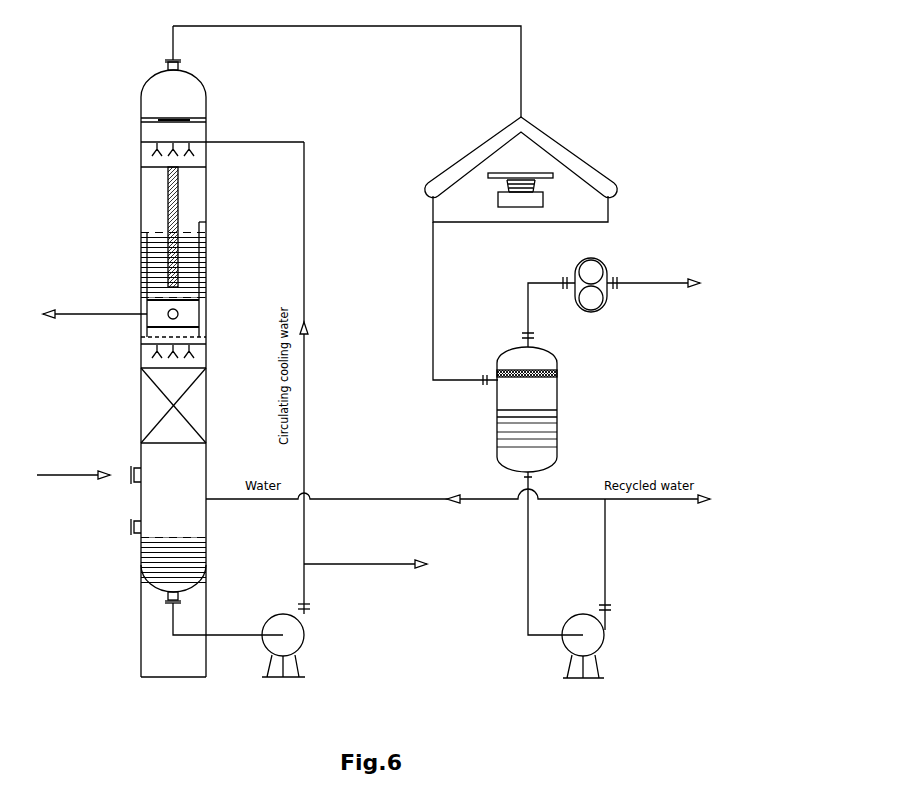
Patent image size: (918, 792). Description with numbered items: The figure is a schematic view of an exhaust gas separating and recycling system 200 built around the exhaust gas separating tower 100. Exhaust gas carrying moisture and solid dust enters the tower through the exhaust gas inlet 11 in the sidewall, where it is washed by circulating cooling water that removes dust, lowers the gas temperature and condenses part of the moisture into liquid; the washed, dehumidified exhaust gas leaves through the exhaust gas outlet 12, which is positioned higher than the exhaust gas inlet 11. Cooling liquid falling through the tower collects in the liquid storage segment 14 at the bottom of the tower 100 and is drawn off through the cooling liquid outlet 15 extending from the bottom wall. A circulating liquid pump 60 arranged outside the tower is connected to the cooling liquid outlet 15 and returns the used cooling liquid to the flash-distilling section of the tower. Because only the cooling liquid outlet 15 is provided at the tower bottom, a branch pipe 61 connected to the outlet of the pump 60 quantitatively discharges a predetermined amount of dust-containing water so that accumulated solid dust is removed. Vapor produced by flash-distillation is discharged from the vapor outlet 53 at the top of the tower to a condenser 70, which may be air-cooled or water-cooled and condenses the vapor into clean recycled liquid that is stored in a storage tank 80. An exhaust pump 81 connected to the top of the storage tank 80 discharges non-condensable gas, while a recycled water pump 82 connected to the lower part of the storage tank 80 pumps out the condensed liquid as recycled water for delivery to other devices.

The exhaust gas separating and recycling system 200 is at (592, 26).
The exhaust gas separating tower 100 is at (141, 193).
The vapor outlet 53 is at (165, 61).
The exhaust gas outlet 12 is at (178, 313).
The exhaust gas inlet 11 is at (138, 480).
The liquid storage segment 14 is at (150, 562).
The cooling liquid outlet 15 is at (165, 602).
The circulating liquid pump 60 is at (300, 650).
The branch pipe 61 is at (330, 567).
The condenser 70 is at (575, 155).
The storage tank 80 is at (557, 413).
The exhaust pump 81 is at (595, 310).
The recycled water pump 82 is at (600, 645).